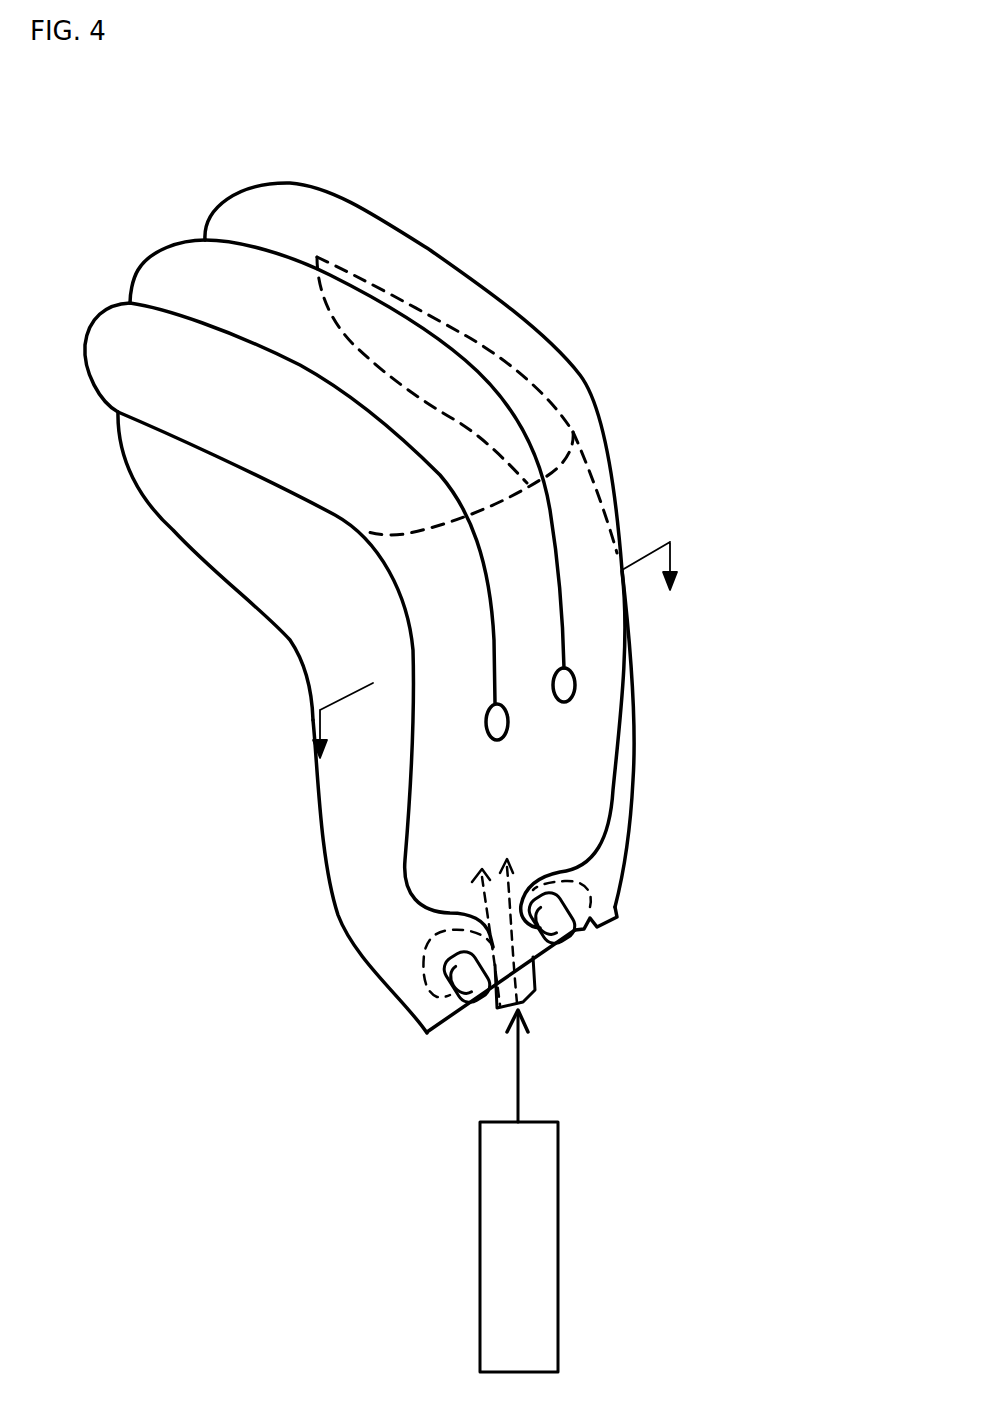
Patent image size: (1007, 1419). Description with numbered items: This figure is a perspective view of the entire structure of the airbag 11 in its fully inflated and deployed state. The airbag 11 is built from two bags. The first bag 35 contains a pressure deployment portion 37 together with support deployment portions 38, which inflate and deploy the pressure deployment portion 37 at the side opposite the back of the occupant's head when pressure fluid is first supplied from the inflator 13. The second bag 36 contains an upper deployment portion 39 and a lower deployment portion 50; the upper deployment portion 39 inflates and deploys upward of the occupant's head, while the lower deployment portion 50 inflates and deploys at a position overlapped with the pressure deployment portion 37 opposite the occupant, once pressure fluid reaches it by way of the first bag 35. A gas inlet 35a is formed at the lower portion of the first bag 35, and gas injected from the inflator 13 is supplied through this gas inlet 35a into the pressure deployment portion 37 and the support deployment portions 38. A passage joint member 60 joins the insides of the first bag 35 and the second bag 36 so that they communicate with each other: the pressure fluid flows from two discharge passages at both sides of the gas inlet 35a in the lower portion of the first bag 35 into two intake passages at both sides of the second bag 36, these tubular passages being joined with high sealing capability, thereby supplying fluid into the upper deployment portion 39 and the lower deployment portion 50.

The airbag 11 is at (728, 167).
The inflator 13 is at (558, 1263).
The first bag 35 is at (380, 963).
The gas inlet 35a is at (540, 975).
The second bag 36 is at (175, 238).
The pressure deployment portion 37 is at (277, 650).
The support deployment portion 38 is at (270, 630).
The upper deployment portion 39 is at (650, 380).
The lower deployment portion 50 is at (751, 415).
The passage joint member 60 is at (567, 953).